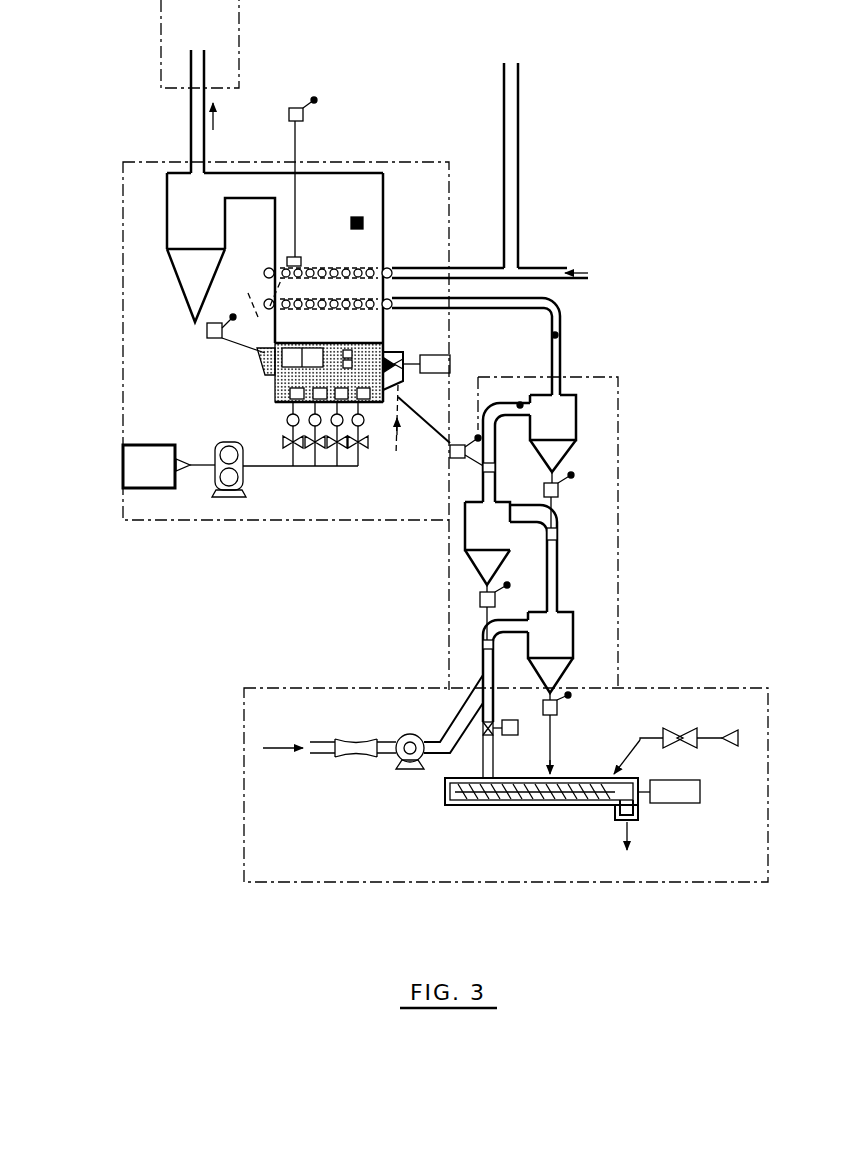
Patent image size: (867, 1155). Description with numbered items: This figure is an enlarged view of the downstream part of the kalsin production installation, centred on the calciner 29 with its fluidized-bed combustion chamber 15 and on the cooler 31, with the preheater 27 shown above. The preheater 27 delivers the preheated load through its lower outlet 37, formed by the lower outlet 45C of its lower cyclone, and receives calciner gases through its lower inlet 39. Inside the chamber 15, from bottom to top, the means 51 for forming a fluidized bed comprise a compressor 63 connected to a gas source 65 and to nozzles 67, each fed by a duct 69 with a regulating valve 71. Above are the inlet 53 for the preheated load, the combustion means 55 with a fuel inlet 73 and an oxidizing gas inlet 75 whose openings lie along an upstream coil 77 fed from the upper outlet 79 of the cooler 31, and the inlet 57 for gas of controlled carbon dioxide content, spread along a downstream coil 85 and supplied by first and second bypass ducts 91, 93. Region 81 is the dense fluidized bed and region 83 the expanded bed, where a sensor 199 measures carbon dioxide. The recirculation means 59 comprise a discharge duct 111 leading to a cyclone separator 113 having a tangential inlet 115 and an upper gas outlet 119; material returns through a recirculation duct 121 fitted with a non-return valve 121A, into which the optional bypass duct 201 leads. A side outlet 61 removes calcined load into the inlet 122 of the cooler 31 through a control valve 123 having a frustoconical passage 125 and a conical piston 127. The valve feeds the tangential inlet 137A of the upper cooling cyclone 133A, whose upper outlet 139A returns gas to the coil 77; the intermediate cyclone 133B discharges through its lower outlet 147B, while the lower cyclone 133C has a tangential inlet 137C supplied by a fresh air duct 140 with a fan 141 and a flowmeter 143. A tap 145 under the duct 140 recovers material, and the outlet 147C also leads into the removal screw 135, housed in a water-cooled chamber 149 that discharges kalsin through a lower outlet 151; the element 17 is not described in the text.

The fluidized-bed combustion chamber 15 is at (138, 290).
The cone bottom outlet 17 is at (194, 318).
The preheater 27 is at (161, 25).
The calciner 29 is at (118, 318).
The cooler 31 is at (753, 686).
The lower outlet 37 is at (298, 135).
The lower inlet 39 is at (191, 122).
The lower outlet of the lower cyclone 45C is at (305, 117).
The means for forming a fluidized bed 51 is at (243, 428).
The inlet for introducing the preheated mineral load 53 is at (270, 377).
The combustion means 55 is at (388, 333).
The inlet for introducing a treatment gas 57 is at (395, 259).
The means for recirculating the calcined mineral load 59 is at (156, 215).
The adjustable side outlet 61 is at (395, 431).
The compressor 63 is at (228, 498).
The gas source 65 is at (138, 478).
The nozzles 67 is at (292, 410).
The duct 69 is at (297, 468).
The regulating valve 71 is at (320, 445).
The inlet for supplying fuel 73 is at (316, 349).
The inlet for injecting an oxidizing gas 75 is at (395, 296).
The upstream coil 77 is at (385, 248).
The upper outlet 79 is at (558, 335).
The region of dense fluidized bed 81 is at (366, 366).
The region of expanded fluidized bed 83 is at (323, 206).
The downstream coil 85 is at (269, 271).
The first bypass duct 91 is at (512, 198).
The second bypass duct 93 is at (528, 268).
The duct for discharging the material and the gas 111 is at (260, 185).
The cyclone separator 113 is at (163, 238).
The tangential inlet 115 is at (228, 185).
The upper outlet for discharging the gas 119 is at (160, 163).
The recirculation duct 121 is at (207, 338).
The non-return valve 121A is at (215, 338).
The inlet for supplying the material 122 is at (427, 445).
The valve for controlling the amount of mineral load removed 123 is at (414, 396).
The frustoconical flow passage 125 is at (405, 347).
The movable conical piston 127 is at (402, 372).
The upper cooling cyclone 133A is at (560, 422).
The intermediate cyclone 133B is at (470, 540).
The lower cyclone 133C is at (560, 632).
The screw for removing the final product 135 is at (552, 803).
The tangential inlet of the upper cooling cyclone 137A is at (520, 404).
The tangential inlet of the lower cyclone 137C is at (482, 665).
The upper outlet of the upper cyclone 139A is at (553, 393).
The duct for introducing fresh air 140 is at (428, 755).
The fan 141 is at (404, 735).
The flowmeter 143 is at (350, 756).
The tap 145 is at (495, 713).
The lower outlet of the intermediate cyclone 147B is at (480, 600).
The outlet for discharging material from the lower cyclone 147C is at (560, 708).
The cooling chamber 149 is at (597, 805).
The lower outlet for discharging kalsin 151 is at (640, 812).
The sensor 199 is at (360, 220).
The material bypass duct 201 is at (250, 295).